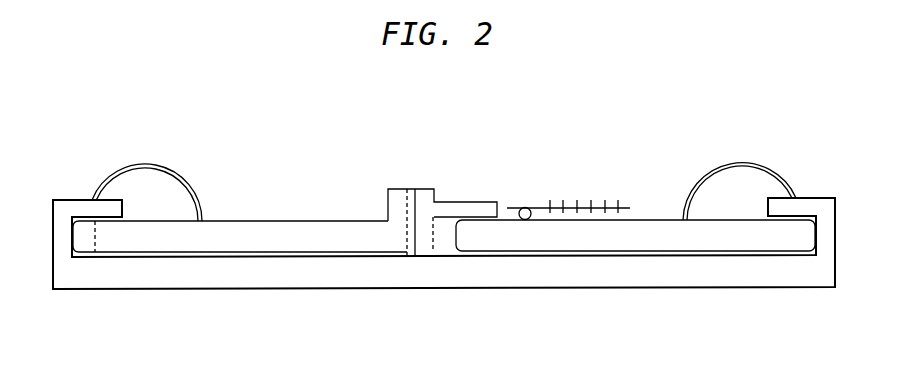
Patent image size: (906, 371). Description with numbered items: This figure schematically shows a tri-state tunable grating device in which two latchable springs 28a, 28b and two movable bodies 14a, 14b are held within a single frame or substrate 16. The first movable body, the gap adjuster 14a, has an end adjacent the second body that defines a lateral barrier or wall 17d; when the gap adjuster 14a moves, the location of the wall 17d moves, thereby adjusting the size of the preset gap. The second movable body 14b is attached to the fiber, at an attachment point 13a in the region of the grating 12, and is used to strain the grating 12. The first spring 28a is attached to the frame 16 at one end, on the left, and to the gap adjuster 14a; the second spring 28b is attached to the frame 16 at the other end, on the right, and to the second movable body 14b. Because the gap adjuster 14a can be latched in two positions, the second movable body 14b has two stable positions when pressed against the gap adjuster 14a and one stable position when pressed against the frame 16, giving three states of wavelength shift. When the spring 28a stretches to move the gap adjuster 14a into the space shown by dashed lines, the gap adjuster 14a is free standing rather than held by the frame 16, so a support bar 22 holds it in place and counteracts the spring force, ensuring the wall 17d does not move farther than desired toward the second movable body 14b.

The grating 12 is at (558, 195).
The attachment point 13a is at (521, 208).
The gap adjuster 14a is at (270, 240).
The second movable body 14b is at (657, 245).
The frame or substrate 16 is at (206, 270).
The lateral barrier or wall 17d is at (417, 200).
The support bar 22 is at (449, 217).
The first latchable spring 28a is at (108, 177).
The second latchable spring 28b is at (772, 170).